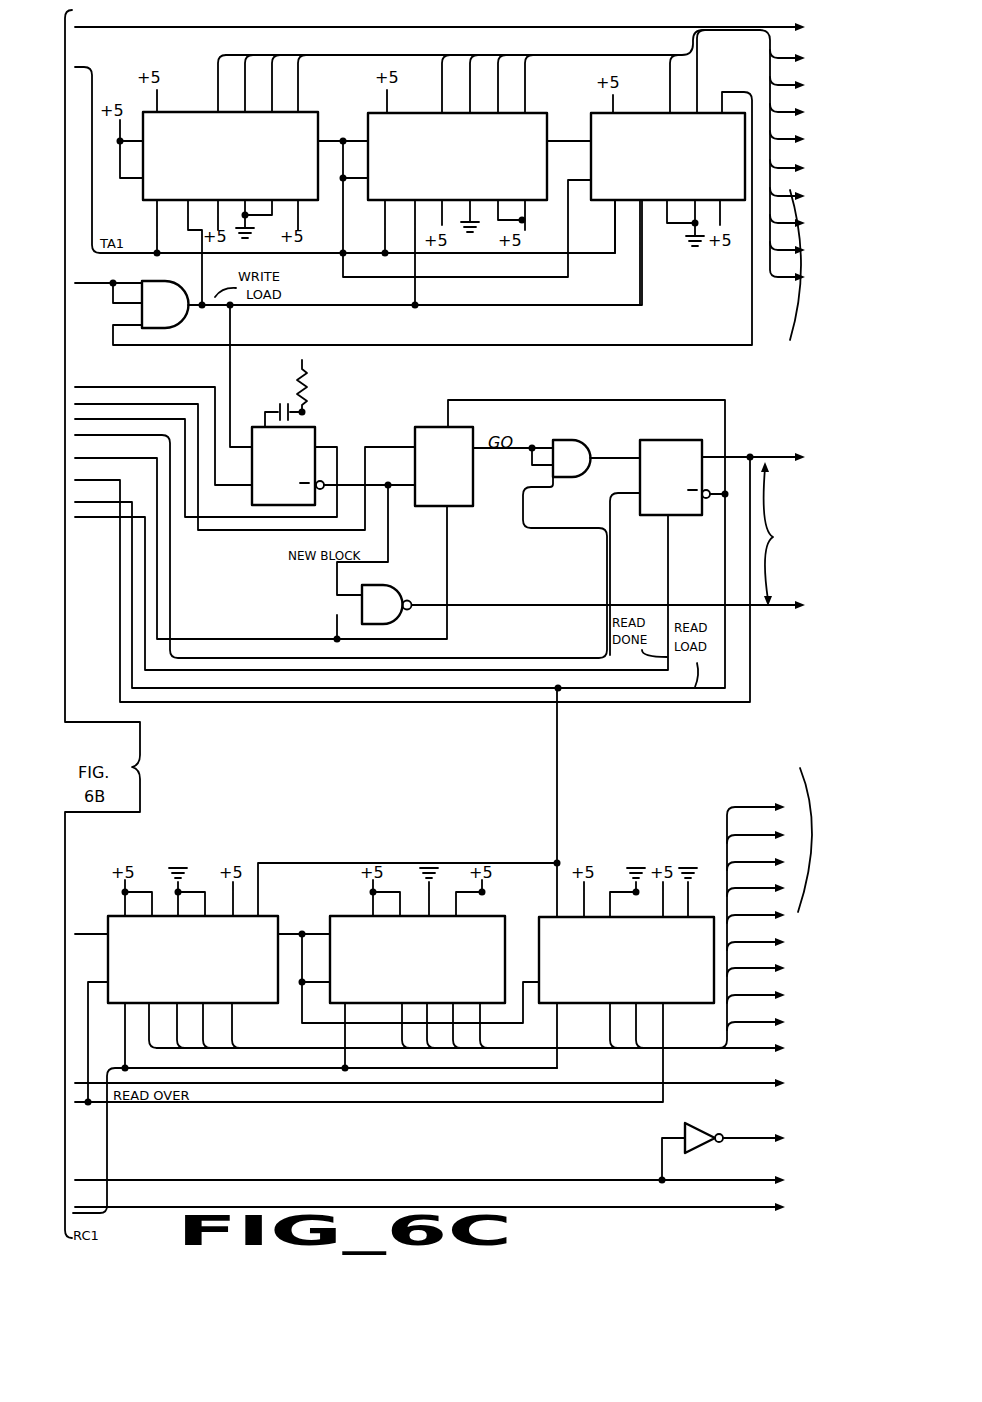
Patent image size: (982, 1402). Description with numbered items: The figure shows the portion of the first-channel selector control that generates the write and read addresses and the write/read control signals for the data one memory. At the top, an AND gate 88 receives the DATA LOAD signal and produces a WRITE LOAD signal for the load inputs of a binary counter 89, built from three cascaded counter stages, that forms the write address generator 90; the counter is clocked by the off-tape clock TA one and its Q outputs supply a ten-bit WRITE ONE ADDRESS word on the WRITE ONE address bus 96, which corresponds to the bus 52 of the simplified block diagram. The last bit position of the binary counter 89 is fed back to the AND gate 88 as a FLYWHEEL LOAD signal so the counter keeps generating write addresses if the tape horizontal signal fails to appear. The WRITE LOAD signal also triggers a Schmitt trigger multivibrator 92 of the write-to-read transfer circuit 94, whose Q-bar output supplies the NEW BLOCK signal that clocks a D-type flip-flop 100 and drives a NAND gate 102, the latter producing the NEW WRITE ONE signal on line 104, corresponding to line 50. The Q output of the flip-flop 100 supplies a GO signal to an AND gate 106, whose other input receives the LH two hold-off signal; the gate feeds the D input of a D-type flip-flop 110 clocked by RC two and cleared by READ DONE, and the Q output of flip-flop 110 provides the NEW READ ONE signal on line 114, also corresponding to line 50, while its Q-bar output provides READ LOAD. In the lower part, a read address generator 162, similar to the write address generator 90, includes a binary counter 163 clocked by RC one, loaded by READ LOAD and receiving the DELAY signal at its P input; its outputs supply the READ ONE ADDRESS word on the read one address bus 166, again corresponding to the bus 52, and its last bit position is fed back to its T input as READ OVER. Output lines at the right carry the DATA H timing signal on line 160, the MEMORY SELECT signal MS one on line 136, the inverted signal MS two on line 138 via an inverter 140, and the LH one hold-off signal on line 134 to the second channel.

The line 50 is at (783, 534).
The bus 52 is at (776, 299).
The AND gate 88 is at (142, 312).
The binary counter 89 is at (318, 136).
The write address generator 90 is at (338, 70).
The Schmitt trigger multivibrator 92 is at (310, 427).
The write-to-read transfer circuit 94 is at (535, 395).
The WRITE 1 address bus 96 is at (768, 62).
The D-type flip-flop 100 is at (412, 432).
The NAND gate 102 is at (385, 595).
The line 104 is at (758, 612).
The AND gate 106 is at (568, 442).
The D-type flip-flop 110 is at (655, 445).
The line 114 is at (770, 455).
The line 134 is at (722, 1211).
The line 136 is at (722, 1184).
The line 138 is at (722, 1136).
The inverter 140 is at (680, 1129).
The line 160 is at (722, 1083).
The read address generator 162 is at (344, 843).
The binary counter 163 is at (322, 918).
The read 1 address bus 166 is at (727, 826).